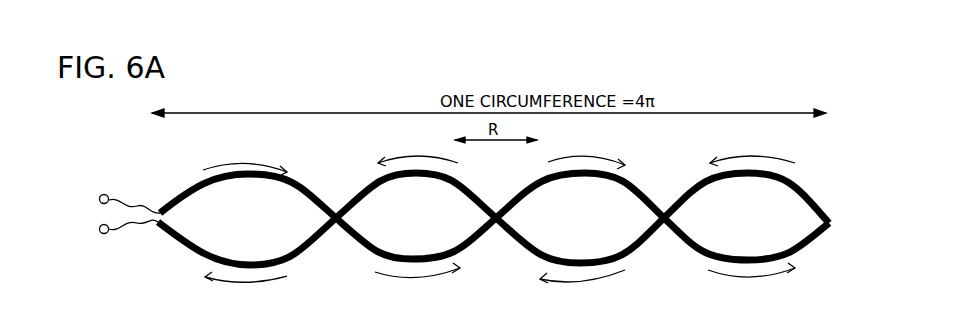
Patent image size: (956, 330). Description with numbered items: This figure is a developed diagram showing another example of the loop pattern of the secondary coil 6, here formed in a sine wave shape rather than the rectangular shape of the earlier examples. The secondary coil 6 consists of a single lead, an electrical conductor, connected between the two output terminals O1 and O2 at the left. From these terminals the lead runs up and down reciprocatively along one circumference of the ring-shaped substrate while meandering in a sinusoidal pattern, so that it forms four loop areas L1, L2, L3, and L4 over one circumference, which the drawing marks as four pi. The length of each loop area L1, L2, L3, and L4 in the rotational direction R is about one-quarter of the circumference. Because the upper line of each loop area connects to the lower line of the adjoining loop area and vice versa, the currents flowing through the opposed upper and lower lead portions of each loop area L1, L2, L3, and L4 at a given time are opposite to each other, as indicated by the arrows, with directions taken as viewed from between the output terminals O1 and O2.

The secondary coil 6 is at (191, 193).
The output terminal O1 is at (127, 192).
The output terminal O2 is at (124, 241).
The loop area L1 is at (312, 210).
The loop area L2 is at (372, 225).
The loop area L3 is at (617, 210).
The loop area L4 is at (697, 210).